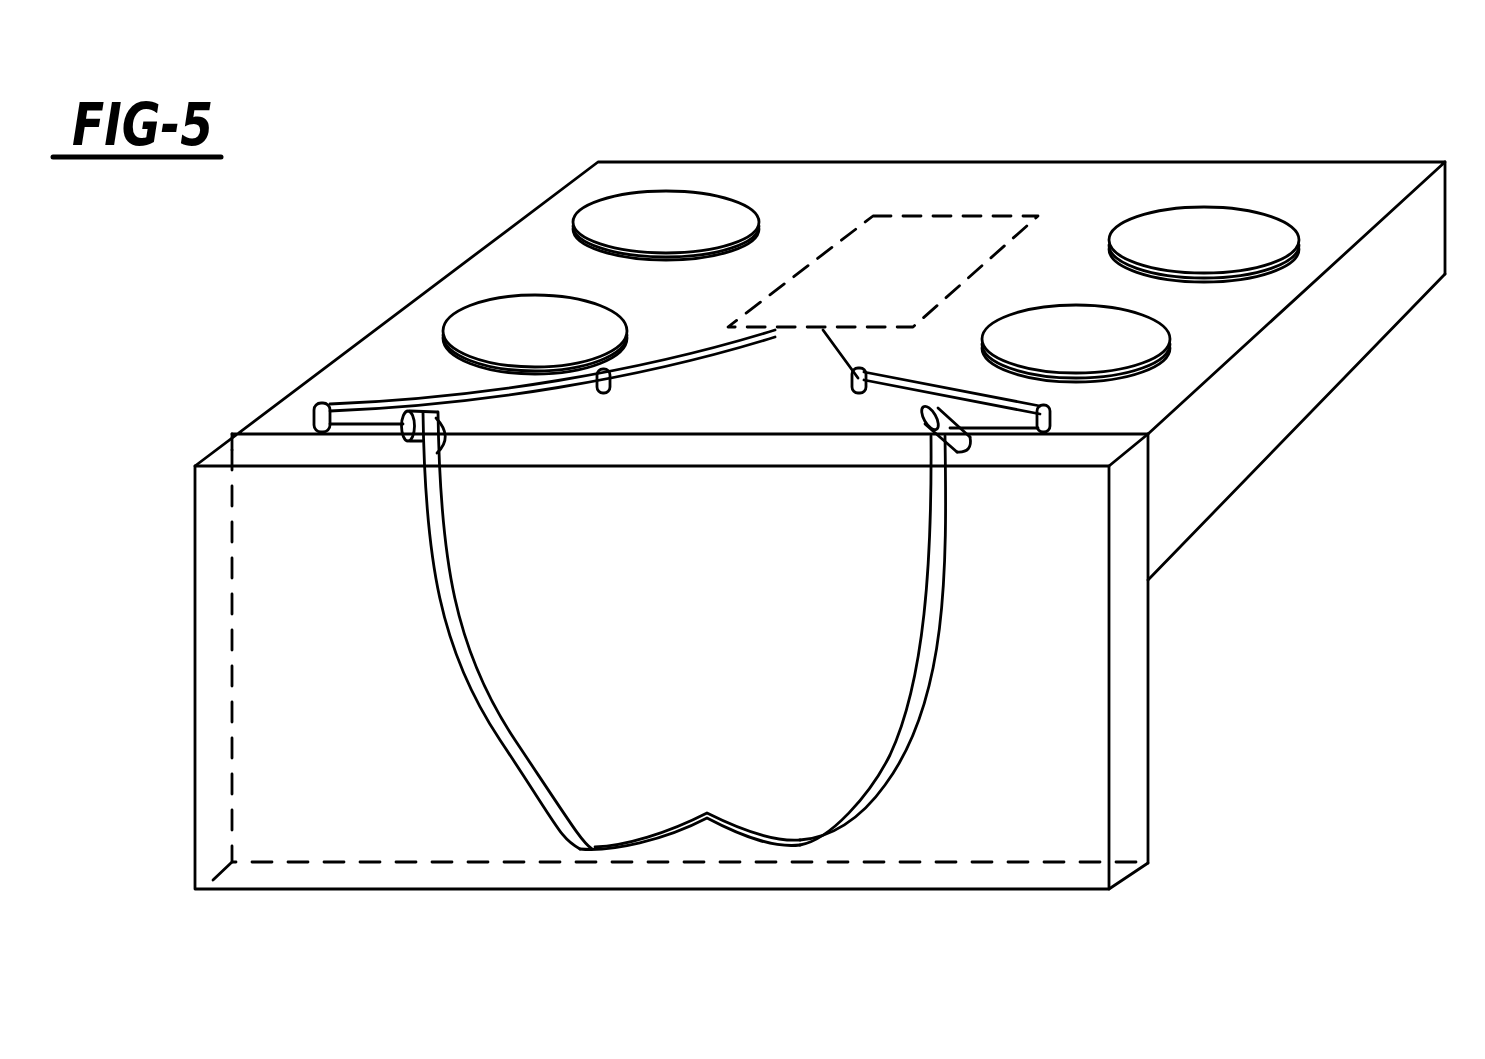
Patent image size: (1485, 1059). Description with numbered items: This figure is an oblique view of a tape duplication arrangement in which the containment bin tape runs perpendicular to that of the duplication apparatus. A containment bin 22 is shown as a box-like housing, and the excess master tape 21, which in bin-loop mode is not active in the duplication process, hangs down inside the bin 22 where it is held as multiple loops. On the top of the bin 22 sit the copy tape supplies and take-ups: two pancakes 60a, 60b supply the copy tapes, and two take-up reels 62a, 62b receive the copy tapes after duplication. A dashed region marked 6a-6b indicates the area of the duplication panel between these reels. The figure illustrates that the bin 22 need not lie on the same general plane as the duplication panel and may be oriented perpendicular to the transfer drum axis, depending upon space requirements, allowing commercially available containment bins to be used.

The master tape 21 is at (478, 737).
The containment bin 22 is at (1126, 781).
The pancake 60a is at (640, 217).
The pancake 60b is at (1133, 353).
The take-up reel 62a is at (470, 332).
The take-up reel 62b is at (1146, 231).
The section region for FIGS. 6a-6b is at (920, 248).